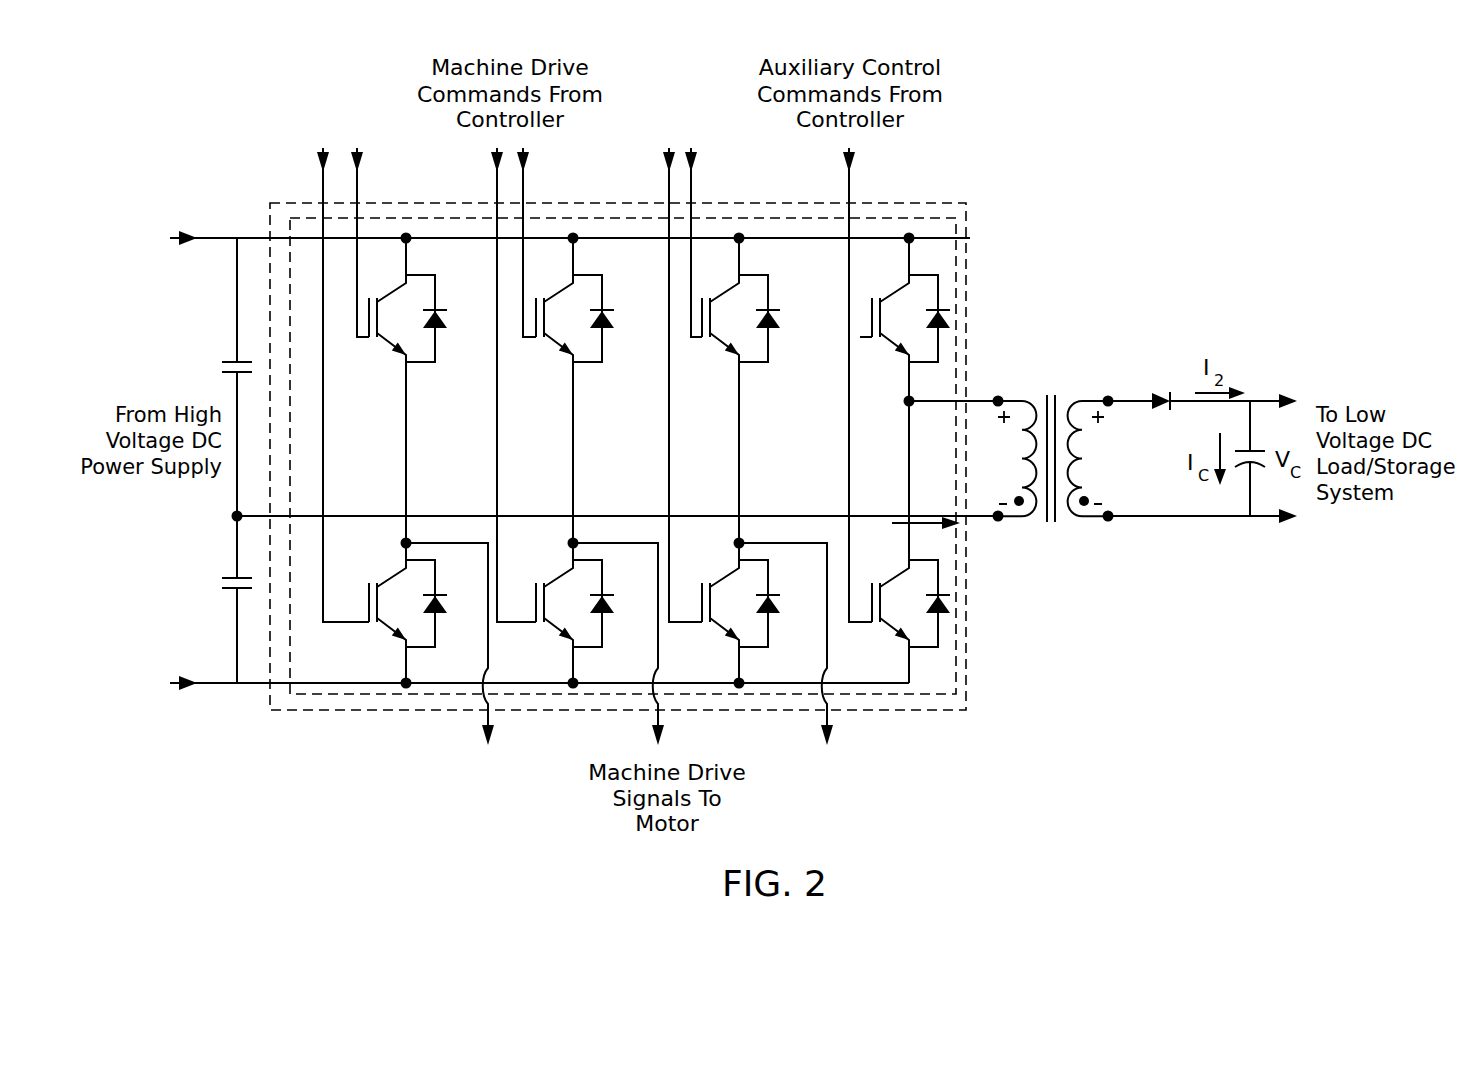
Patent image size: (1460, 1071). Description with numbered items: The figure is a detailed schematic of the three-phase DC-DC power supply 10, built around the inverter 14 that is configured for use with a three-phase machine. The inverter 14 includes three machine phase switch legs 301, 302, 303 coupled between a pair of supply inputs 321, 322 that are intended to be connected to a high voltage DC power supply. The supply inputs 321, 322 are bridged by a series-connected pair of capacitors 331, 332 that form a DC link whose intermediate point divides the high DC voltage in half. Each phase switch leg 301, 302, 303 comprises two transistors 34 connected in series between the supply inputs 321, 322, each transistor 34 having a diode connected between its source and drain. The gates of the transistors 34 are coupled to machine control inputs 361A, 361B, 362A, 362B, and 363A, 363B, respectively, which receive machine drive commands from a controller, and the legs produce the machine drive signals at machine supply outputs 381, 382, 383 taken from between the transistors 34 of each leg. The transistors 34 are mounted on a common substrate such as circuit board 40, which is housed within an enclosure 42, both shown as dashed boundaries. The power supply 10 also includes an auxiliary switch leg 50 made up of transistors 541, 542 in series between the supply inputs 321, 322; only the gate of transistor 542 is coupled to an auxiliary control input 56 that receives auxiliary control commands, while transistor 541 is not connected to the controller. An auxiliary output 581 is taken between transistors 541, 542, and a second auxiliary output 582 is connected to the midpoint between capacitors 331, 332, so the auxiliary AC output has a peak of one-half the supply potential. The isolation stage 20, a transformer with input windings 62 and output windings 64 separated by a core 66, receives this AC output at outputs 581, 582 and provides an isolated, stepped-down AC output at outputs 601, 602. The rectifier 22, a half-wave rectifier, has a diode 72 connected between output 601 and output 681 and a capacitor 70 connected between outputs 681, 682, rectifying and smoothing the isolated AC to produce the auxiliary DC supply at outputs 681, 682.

The DC-DC power supply 10 is at (985, 273).
The inverter 14 is at (445, 650).
The isolation stage 20 is at (1043, 520).
The rectifier 22 is at (1202, 522).
The transistors 34 is at (390, 352).
The circuit board 40 is at (957, 636).
The enclosure 42 is at (967, 674).
The auxiliary switch leg 50 is at (918, 658).
The auxiliary control input 56 is at (843, 163).
The input windings 62 is at (1032, 398).
The output windings 64 is at (1072, 518).
The core 66 is at (1054, 397).
The capacitor 70 is at (1248, 423).
The diode 72 is at (1163, 412).
The first machine phase switch leg 301 is at (385, 632).
The second machine phase switch leg 302 is at (540, 628).
The third machine phase switch leg 303 is at (760, 660).
The supply input 321 is at (203, 242).
The supply input 322 is at (203, 680).
The capacitor 331 is at (236, 338).
The capacitor 332 is at (236, 551).
The machine control input 361A is at (321, 183).
The machine control input 361B is at (360, 173).
The machine control input 362A is at (490, 163).
The machine control input 362B is at (525, 180).
The machine control input 363A is at (662, 163).
The machine control input 363B is at (693, 172).
The machine supply output 381 is at (491, 722).
The machine supply output 382 is at (660, 722).
The machine supply output 383 is at (830, 722).
The transistor 541 is at (889, 352).
The transistor 542 is at (893, 575).
The auxiliary output 581 is at (997, 396).
The auxiliary output 582 is at (998, 522).
The isolation stage output 601 is at (1110, 397).
The isolation stage output 602 is at (1112, 522).
The rectifier output 681 is at (1270, 398).
The rectifier output 682 is at (1270, 522).